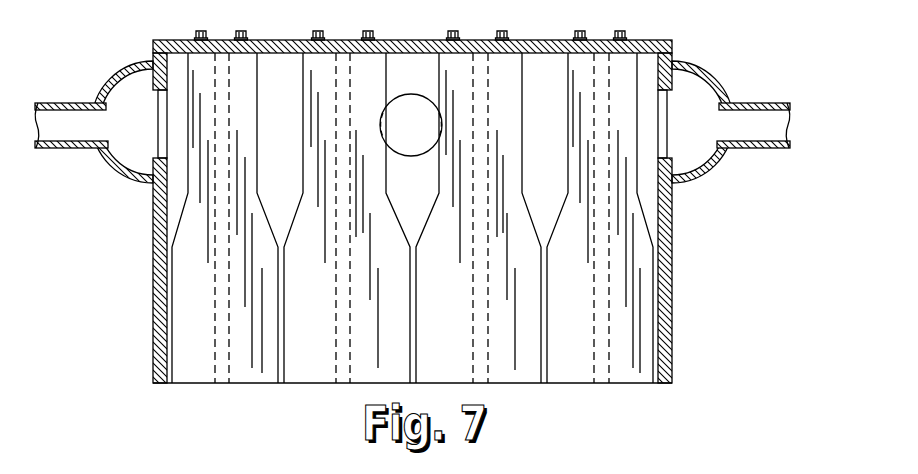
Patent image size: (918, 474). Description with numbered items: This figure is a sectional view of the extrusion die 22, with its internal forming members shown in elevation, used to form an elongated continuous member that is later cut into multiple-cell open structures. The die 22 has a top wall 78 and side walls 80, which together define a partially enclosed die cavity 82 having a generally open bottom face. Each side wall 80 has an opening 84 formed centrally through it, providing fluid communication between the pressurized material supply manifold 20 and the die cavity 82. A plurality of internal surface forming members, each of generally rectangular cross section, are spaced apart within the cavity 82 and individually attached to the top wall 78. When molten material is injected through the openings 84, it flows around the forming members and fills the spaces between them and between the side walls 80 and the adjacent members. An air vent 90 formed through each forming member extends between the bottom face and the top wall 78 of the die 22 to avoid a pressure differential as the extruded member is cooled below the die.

The extrusion die 22 is at (716, 271).
The manifold 20 is at (119, 172).
The top wall 78 is at (543, 40).
The side walls 80 is at (153, 248).
The die cavity 82 is at (656, 205).
The opening 84 is at (152, 123).
The air vent 90 is at (472, 345).